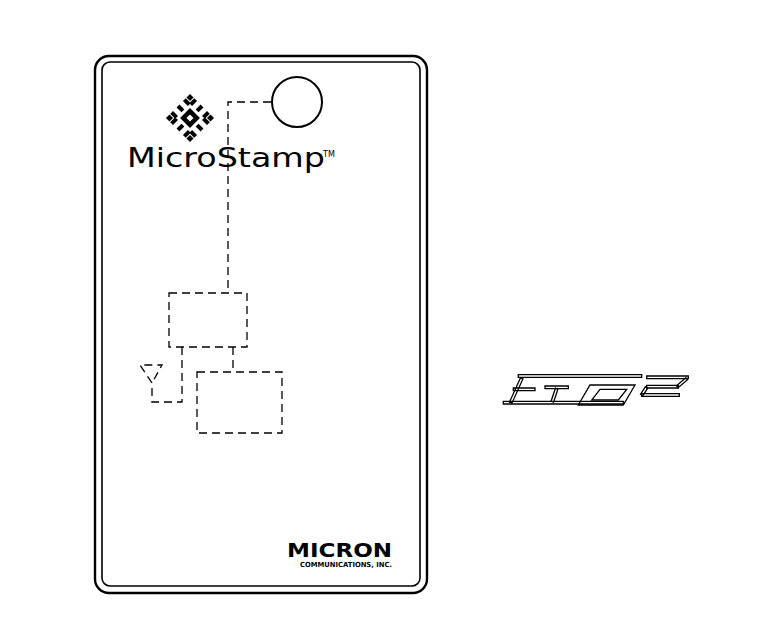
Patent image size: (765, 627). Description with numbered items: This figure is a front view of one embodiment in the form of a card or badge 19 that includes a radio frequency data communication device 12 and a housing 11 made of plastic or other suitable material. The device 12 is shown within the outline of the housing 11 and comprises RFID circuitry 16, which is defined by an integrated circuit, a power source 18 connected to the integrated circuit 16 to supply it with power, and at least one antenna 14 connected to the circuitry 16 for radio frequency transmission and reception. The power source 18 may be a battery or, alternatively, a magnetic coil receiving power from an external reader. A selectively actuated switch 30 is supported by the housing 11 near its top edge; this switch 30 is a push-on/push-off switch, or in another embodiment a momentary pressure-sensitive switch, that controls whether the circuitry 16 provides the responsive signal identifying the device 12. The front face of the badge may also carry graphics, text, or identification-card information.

The housing 11 is at (137, 522).
The radio frequency data communication device 12 is at (313, 432).
The antenna 14 is at (143, 363).
The RFID circuitry 16 is at (207, 292).
The power source 18 is at (238, 435).
The card or badge 19 is at (383, 203).
The switch 30 is at (293, 76).